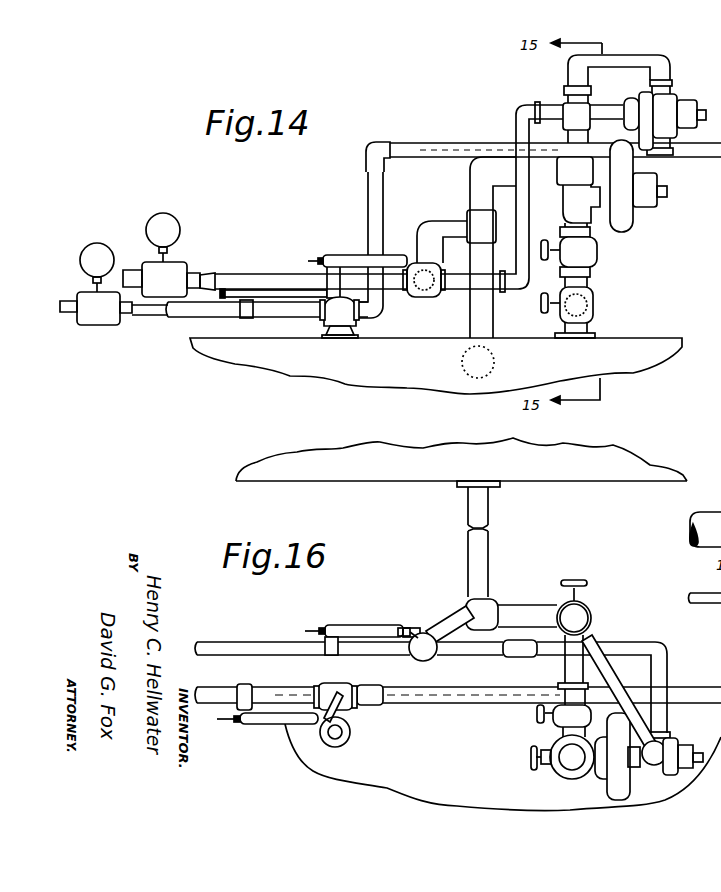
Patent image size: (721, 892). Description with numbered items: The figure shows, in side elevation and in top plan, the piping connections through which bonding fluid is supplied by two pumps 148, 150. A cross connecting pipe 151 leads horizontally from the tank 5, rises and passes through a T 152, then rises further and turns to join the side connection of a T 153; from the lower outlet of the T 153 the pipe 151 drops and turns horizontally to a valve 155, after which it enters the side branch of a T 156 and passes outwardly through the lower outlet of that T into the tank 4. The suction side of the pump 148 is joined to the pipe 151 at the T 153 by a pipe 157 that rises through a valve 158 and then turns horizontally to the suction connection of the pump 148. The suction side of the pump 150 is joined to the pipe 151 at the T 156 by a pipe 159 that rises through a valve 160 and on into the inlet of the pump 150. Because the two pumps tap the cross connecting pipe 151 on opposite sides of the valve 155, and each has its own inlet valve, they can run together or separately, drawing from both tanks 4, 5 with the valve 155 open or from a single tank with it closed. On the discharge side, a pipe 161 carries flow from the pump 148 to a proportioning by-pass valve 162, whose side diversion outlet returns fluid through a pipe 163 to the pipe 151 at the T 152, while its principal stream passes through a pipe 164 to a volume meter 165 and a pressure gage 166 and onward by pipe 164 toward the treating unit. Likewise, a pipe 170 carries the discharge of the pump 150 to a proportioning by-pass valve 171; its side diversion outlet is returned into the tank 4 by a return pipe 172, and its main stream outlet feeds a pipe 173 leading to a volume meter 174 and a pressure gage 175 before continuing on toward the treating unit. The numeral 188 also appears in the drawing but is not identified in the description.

In FIG. 14, the tank 4 is at (632, 338).
In FIG. 16, the tank 4 is at (503, 745).
In FIG. 16, the tank 5 is at (571, 483).
In FIG. 14, the pump 148 is at (675, 96).
In FIG. 16, the pump 148 is at (680, 741).
In FIG. 14, the pump 150 is at (630, 225).
In FIG. 16, the pump 150 is at (613, 790).
In FIG. 14, the cross connecting pipe 151 is at (481, 316).
In FIG. 16, the cross connecting pipe 151 is at (468, 537).
In FIG. 14, the T 152 is at (468, 212).
In FIG. 14, the T 153 is at (563, 181).
In FIG. 14, the valve 155 is at (594, 302).
In FIG. 16, the valve 155 is at (545, 712).
In FIG. 14, the T 156 is at (553, 318).
In FIG. 14, the pipe 157 is at (618, 54).
In FIG. 14, the valve 158 is at (566, 90).
In FIG. 16, the valve 158 is at (590, 606).
In FIG. 14, the pipe 159 is at (590, 232).
In FIG. 14, the valve 160 is at (595, 255).
In FIG. 14, the pipe 161 is at (608, 104).
In FIG. 16, the pipe 161 is at (643, 644).
In FIG. 14, the proportioning by-pass valve 162 is at (422, 298).
In FIG. 16, the proportioning by-pass valve 162 is at (418, 660).
In FIG. 14, the pipe 163 is at (440, 238).
In FIG. 16, the pipe 163 is at (445, 620).
In FIG. 14, the pipe 164 is at (128, 270).
In FIG. 16, the pipe 164 is at (257, 642).
In FIG. 14, the volume meter 165 is at (184, 263).
In FIG. 14, the pressure gage 166 is at (180, 222).
In FIG. 14, the pipe 170 is at (368, 214).
In FIG. 16, the pipe 170 is at (428, 705).
In FIG. 14, the proportioning by-pass valve 171 is at (322, 315).
In FIG. 16, the proportioning by-pass valve 171 is at (345, 688).
In FIG. 14, the return pipe 172 is at (352, 332).
In FIG. 16, the return pipe 172 is at (350, 732).
In FIG. 14, the pipe 173 is at (160, 318).
In FIG. 14, the volume meter 174 is at (92, 326).
In FIG. 14, the pressure gage 175 is at (97, 243).
In FIG. 16, the pipe 188 is at (706, 597).